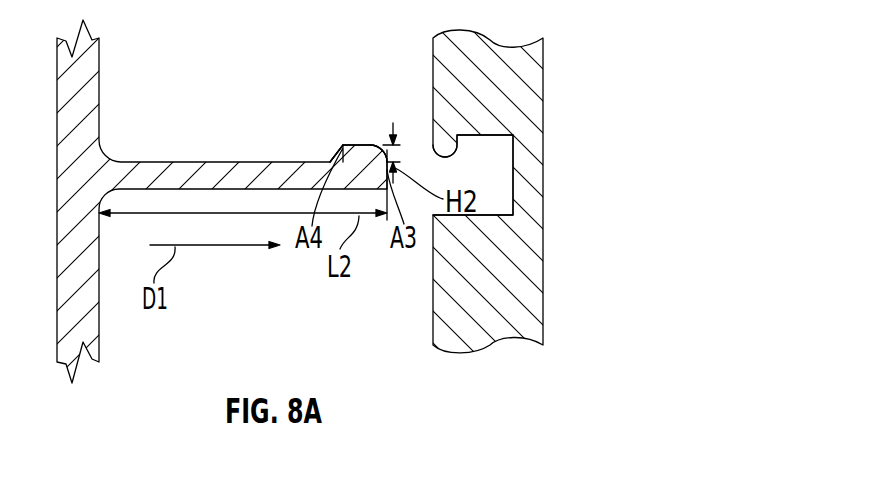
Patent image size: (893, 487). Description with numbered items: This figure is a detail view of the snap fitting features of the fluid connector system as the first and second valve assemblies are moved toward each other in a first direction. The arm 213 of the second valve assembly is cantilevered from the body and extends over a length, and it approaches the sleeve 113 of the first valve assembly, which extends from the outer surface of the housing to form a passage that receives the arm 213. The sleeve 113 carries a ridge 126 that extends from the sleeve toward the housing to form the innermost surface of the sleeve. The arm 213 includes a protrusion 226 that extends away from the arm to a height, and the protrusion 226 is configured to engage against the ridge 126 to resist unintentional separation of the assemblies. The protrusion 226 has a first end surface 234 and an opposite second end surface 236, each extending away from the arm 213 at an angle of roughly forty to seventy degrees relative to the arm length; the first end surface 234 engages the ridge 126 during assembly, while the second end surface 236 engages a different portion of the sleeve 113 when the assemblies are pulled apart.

The arm 213 is at (166, 140).
The protrusion 226 is at (356, 146).
The first end surface 234 is at (377, 141).
The second end surface 236 is at (324, 142).
The sleeve 113 is at (556, 112).
The ridge 126 is at (460, 150).